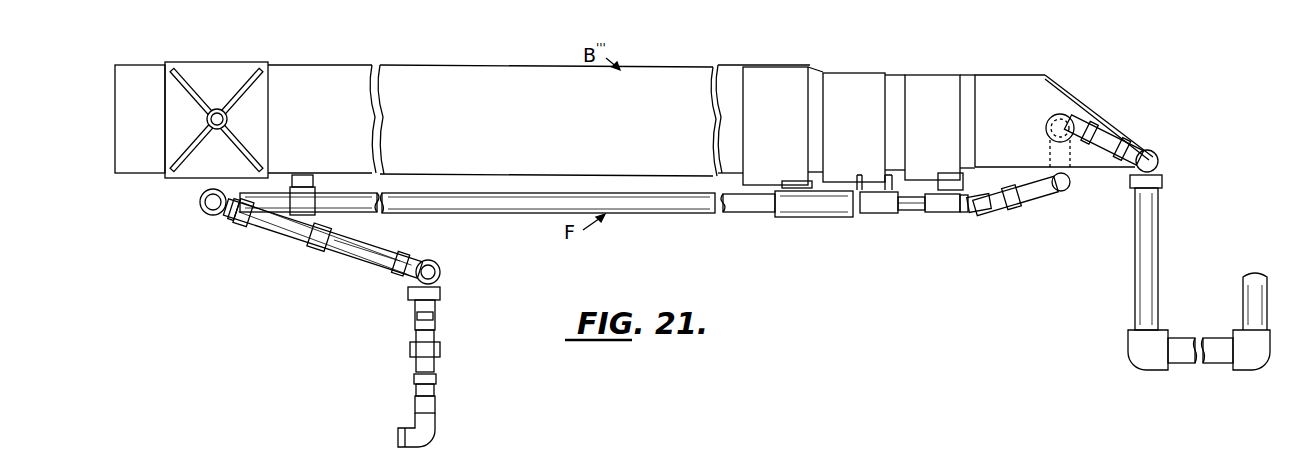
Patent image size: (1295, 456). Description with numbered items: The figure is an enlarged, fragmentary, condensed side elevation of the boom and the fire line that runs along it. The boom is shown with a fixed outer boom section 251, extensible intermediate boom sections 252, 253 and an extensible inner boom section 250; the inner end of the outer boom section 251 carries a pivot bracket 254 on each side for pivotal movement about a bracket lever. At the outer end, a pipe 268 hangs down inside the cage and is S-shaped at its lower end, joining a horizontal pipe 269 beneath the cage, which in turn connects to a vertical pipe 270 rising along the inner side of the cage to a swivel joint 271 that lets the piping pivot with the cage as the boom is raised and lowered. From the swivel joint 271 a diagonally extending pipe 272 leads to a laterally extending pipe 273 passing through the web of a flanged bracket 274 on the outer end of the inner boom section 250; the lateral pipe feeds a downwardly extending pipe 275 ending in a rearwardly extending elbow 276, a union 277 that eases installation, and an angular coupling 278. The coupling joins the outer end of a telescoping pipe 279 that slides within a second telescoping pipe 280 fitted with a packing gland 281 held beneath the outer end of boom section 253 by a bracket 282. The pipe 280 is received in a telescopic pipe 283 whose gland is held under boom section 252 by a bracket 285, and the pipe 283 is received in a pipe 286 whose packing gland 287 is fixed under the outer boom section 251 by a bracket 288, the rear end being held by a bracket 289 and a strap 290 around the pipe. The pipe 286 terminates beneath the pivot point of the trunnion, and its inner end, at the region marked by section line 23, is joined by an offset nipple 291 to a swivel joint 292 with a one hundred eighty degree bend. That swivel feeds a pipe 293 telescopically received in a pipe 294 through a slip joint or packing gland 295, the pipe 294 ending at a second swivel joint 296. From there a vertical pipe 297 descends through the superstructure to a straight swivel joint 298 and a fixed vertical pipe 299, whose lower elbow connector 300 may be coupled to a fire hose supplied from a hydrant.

The section line 23 is at (855, 234).
The inner boom section 250 is at (977, 89).
The outer boom section 251 is at (303, 72).
The intermediate boom section 252 is at (858, 58).
The intermediate boom section 253 is at (950, 58).
The pivot bracket 254 is at (270, 116).
The pipe 268 is at (1243, 322).
The horizontal pipe 269 is at (1207, 365).
The vertical pipe 270 is at (1158, 230).
The swivel joint 271 is at (1160, 166).
The diagonally extending pipe 272 is at (1105, 140).
The laterally extending pipe 273 is at (1045, 123).
The flanged bracket 274 is at (1068, 107).
The downwardly extending pipe 275 is at (1050, 153).
The elbow 276 is at (1066, 183).
The union 277 is at (1018, 206).
The angular coupling 278 is at (976, 212).
The telescoping pipe 279 is at (963, 214).
The telescoping pipe 280 is at (908, 207).
The packing gland 281 is at (939, 206).
The bracket 282 is at (936, 183).
The telescopic pipe 283 is at (856, 190).
The bracket 285 is at (863, 190).
The pipe 286 is at (374, 213).
The packing gland 287 is at (810, 218).
The bracket 288 is at (783, 181).
The bracket 289 is at (294, 176).
The strap 290 is at (318, 192).
The offset nipple 291 is at (273, 196).
The swivel joint 292 is at (201, 198).
The pipe 293 is at (275, 232).
The pipe 294 is at (362, 258).
The slip joint or packing gland 295 is at (320, 248).
The swivel joint 296 is at (441, 272).
The vertical pipe 297 is at (416, 315).
The straight swivel joint 298 is at (410, 348).
The vertical pipe 299 is at (414, 378).
The elbow connector 300 is at (400, 428).